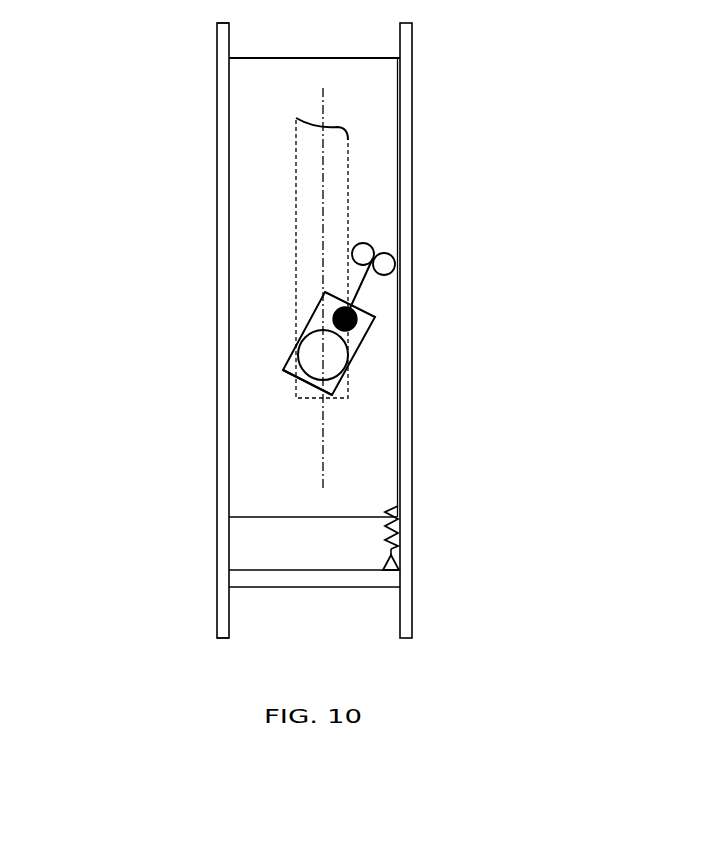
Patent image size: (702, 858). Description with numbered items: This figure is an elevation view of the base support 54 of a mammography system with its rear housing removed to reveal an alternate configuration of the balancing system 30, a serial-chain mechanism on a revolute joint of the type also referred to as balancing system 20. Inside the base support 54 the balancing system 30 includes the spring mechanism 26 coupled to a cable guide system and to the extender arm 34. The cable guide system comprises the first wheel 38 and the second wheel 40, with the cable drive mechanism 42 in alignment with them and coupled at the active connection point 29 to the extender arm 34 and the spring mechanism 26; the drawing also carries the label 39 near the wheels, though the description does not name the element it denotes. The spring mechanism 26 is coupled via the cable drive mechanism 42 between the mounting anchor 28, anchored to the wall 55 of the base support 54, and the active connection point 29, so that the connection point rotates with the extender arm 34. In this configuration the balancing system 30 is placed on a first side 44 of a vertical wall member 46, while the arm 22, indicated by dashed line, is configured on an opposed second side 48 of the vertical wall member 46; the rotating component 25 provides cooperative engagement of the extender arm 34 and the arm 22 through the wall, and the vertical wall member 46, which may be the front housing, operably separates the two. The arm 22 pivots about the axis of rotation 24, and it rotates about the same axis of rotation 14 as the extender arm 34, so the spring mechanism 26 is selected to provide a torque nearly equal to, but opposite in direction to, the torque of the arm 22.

The axis of rotation 14 is at (330, 92).
The balancing system 20 is at (180, 268).
The arm 22 is at (352, 140).
The axis of rotation 24 is at (378, 321).
The rotating component 25 is at (292, 376).
The spring mechanism 26 is at (386, 527).
The mounting anchor 28 is at (382, 557).
The active connection point 29 is at (333, 312).
The balancing system 30 is at (446, 263).
The extender arm 34 is at (298, 337).
The first wheel 38 is at (393, 252).
The link arm 39 is at (378, 246).
The second wheel 40 is at (363, 243).
The cable drive mechanism 42 is at (400, 435).
The first side 44 is at (245, 161).
The vertical wall member 46 is at (388, 352).
The second side 48 is at (240, 101).
The base support 54 is at (146, 80).
The wall 55 is at (253, 570).